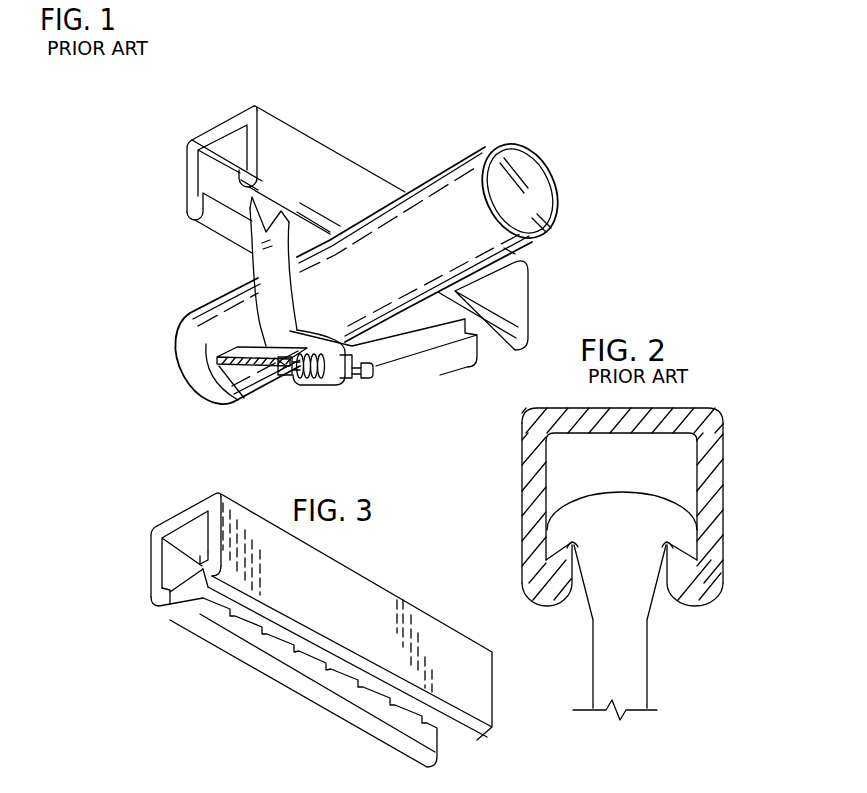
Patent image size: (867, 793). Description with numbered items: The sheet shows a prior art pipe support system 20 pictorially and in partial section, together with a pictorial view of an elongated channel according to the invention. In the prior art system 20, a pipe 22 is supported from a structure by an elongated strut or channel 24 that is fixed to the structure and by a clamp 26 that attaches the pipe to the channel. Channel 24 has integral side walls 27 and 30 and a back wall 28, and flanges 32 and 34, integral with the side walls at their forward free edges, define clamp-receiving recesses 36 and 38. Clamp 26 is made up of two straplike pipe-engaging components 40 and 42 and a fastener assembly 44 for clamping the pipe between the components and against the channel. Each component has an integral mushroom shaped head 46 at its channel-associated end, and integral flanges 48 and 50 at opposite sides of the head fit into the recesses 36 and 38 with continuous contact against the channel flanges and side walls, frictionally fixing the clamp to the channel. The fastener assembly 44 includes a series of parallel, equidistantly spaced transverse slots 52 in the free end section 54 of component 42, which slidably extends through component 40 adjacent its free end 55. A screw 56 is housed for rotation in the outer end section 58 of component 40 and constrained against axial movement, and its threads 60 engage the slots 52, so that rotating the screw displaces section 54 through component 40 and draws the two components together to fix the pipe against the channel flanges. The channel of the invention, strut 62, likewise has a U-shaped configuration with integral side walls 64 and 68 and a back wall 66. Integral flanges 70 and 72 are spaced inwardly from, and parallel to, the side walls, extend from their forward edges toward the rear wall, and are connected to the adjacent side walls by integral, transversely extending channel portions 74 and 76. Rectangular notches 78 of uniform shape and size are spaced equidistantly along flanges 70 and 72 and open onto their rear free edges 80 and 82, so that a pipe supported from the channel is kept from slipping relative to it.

In FIG. 1, the pipe-supporting system 20 is at (124, 258).
In FIG. 1, the pipe 22 is at (437, 174).
In FIG. 1, the channel 24 is at (329, 215).
In FIG. 2, the channel 24 is at (621, 487).
In FIG. 1, the clamp 26 is at (325, 323).
In FIG. 1, the side wall 27 is at (187, 165).
In FIG. 2, the side wall 27 is at (522, 489).
In FIG. 1, the back wall 28 is at (243, 91).
In FIG. 2, the back wall 28 is at (678, 408).
In FIG. 1, the side wall 30 is at (356, 204).
In FIG. 2, the side wall 30 is at (723, 492).
In FIG. 1, the flange 32 is at (205, 192).
In FIG. 2, the flange 32 is at (580, 545).
In FIG. 1, the flange 34 is at (240, 170).
In FIG. 2, the flange 34 is at (667, 543).
In FIG. 2, the clamp-receiving recess 36 is at (548, 552).
In FIG. 2, the clamp-receiving recess 38 is at (695, 552).
In FIG. 1, the pipe-engaging clamp component 40 is at (292, 298).
In FIG. 2, the pipe-engaging clamp component 40 is at (651, 663).
In FIG. 1, the pipe-engaging clamp component 42 is at (357, 347).
In FIG. 1, the fastener assembly 44 is at (360, 378).
In FIG. 1, the mushroom shaped head 46 is at (262, 217).
In FIG. 2, the mushroom shaped head 46 is at (627, 492).
In FIG. 2, the flange 48 is at (522, 564).
In FIG. 2, the flange 50 is at (723, 560).
In FIG. 1, the slots 52 is at (218, 383).
In FIG. 1, the free end section 54 is at (257, 347).
In FIG. 1, the free end 55 is at (322, 383).
In FIG. 1, the screw 56 is at (285, 383).
In FIG. 1, the end section 58 is at (343, 362).
In FIG. 1, the threads 60 is at (312, 337).
In FIG. 3, the strut 62 is at (279, 614).
In FIG. 3, the side wall 64 is at (151, 542).
In FIG. 3, the back wall 66 is at (170, 517).
In FIG. 3, the side wall 68 is at (344, 599).
In FIG. 3, the inner flange 70 is at (167, 586).
In FIG. 3, the inner flange 72 is at (205, 583).
In FIG. 3, the transversely extending channel portion 74 is at (203, 578).
In FIG. 3, the transversely extending channel portion 76 is at (207, 590).
In FIG. 3, the rectangular notches 78 is at (326, 668).
In FIG. 3, the rear free edge 80 is at (200, 562).
In FIG. 3, the rear free edge 82 is at (205, 555).